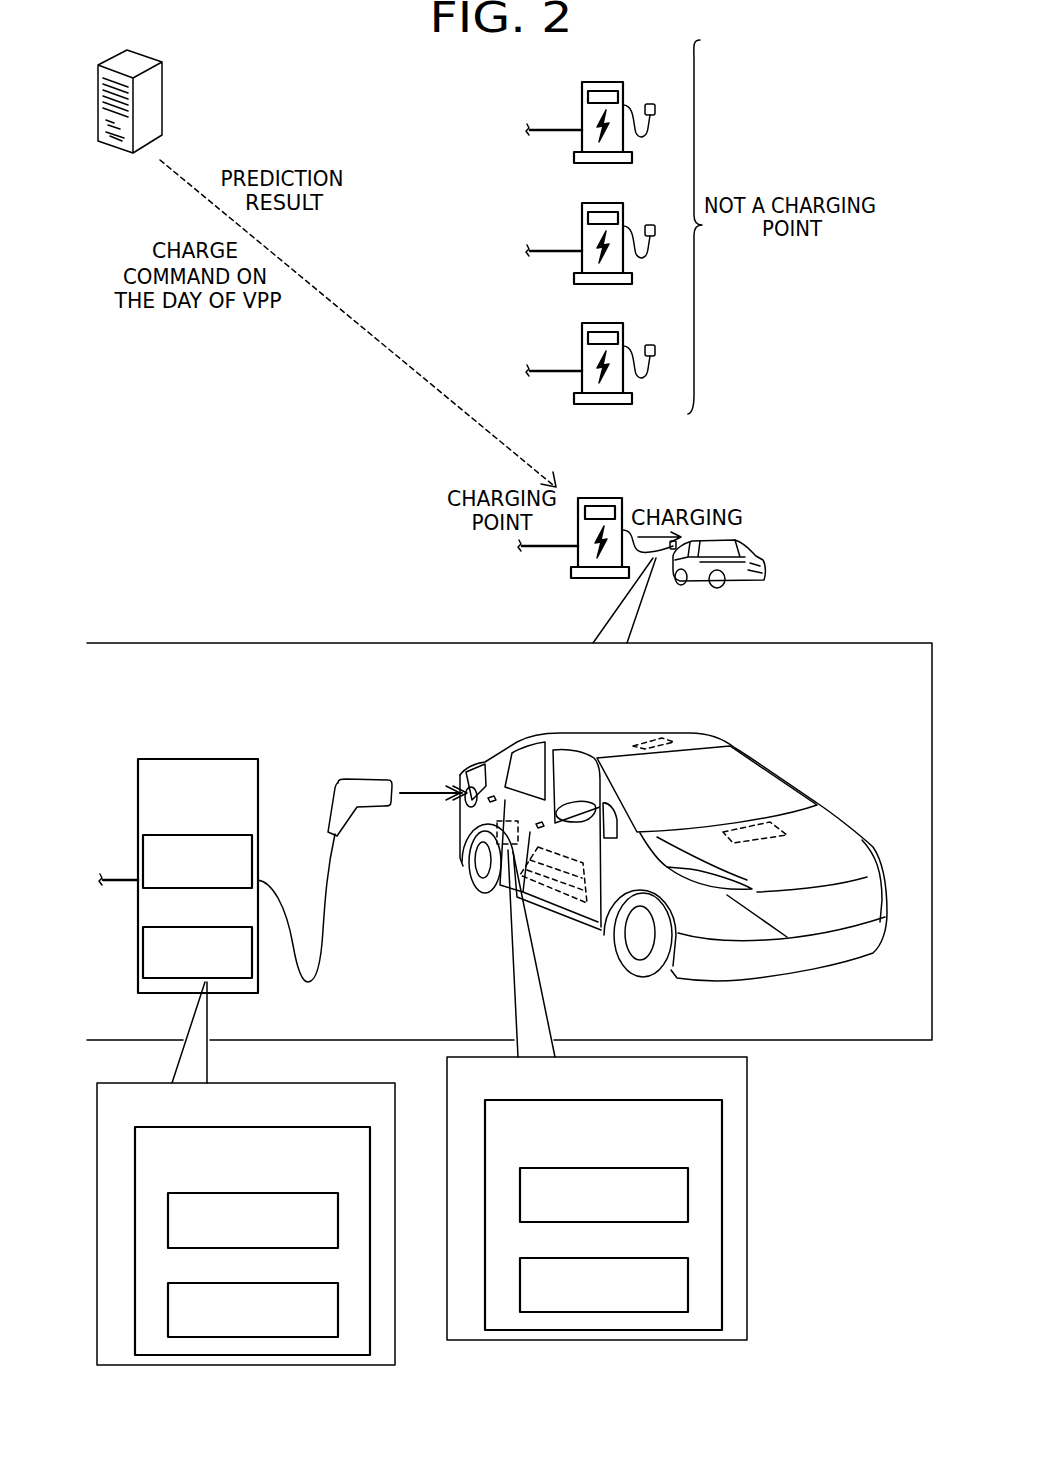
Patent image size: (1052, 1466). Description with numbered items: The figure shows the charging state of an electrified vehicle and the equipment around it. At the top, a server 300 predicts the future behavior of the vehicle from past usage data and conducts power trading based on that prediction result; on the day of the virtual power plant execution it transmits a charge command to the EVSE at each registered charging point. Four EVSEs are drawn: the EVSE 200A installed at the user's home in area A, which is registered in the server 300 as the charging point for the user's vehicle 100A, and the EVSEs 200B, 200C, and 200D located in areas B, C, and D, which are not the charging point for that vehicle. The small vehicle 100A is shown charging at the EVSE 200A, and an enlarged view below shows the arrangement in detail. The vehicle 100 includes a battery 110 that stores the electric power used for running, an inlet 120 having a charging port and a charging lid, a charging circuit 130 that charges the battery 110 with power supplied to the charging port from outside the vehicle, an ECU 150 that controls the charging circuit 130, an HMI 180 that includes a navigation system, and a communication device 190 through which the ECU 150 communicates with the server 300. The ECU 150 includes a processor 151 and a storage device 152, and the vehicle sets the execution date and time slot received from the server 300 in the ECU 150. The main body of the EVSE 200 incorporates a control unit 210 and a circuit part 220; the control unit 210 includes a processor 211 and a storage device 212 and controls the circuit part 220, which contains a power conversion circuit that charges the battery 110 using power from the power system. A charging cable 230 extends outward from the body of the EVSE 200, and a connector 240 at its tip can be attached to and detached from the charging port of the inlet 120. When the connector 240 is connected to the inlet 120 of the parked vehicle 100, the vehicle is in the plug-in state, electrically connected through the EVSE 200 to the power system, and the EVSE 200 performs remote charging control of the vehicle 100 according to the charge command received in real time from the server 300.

The vehicle 100 is at (693, 730).
The vehicle 100A is at (750, 545).
The battery 110 is at (563, 893).
The inlet 120 is at (458, 788).
The charging circuit 130 is at (552, 853).
The electronic control unit 150 is at (495, 833).
The processor 151 is at (636, 1167).
The storage device 152 is at (636, 1257).
The Human Machine Interface 180 is at (777, 828).
The communication device 190 is at (653, 738).
The EVSE 200 is at (246, 1046).
The EVSE 200A is at (603, 495).
The EVSE 200B is at (605, 347).
The EVSE 200C is at (605, 227).
The EVSE 200D is at (603, 78).
The control unit 210 is at (225, 925).
The processor 211 is at (283, 1192).
The storage device 212 is at (283, 1282).
The circuit unit 220 is at (225, 833).
The charging cable 230 is at (328, 908).
The connector 240 is at (366, 780).
The server 300 is at (147, 51).